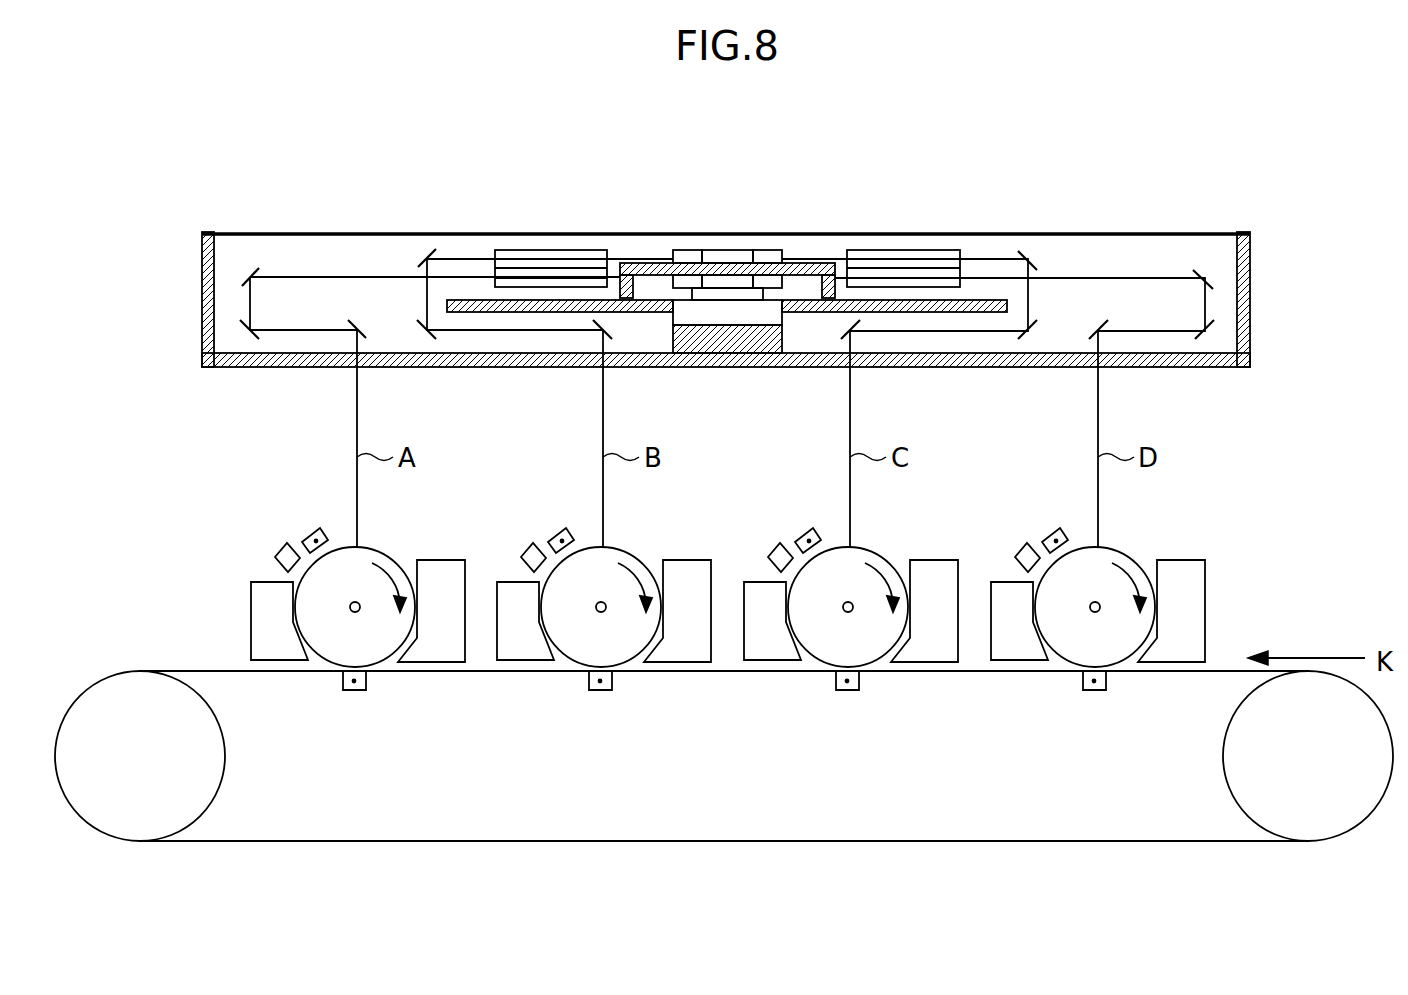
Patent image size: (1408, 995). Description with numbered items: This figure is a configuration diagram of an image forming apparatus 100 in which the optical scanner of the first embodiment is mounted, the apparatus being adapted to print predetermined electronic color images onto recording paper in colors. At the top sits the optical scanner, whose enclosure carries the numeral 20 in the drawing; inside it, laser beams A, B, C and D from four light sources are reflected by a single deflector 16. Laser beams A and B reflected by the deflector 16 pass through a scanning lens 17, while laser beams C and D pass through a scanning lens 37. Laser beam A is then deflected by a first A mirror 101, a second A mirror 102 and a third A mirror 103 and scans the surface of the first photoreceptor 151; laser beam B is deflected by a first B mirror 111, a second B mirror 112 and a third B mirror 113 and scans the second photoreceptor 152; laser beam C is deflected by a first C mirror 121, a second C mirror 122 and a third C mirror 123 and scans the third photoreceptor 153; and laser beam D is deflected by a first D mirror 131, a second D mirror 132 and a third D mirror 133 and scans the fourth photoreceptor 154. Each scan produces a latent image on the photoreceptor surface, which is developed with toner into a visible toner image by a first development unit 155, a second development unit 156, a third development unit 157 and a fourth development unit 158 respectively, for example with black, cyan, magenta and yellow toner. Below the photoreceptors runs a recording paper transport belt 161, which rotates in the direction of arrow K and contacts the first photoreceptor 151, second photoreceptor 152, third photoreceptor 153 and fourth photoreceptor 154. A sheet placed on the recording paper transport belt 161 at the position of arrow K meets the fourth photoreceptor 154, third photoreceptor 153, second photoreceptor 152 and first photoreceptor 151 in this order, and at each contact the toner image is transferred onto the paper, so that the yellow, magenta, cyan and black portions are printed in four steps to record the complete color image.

The image forming apparatus 100 is at (168, 121).
The optical scanning device housing 20 is at (1252, 302).
The deflector 16 is at (730, 250).
The scanning lens 17 is at (549, 250).
The scanning lens 37 is at (905, 250).
The first A mirror 101 is at (250, 267).
The second A mirror 102 is at (248, 340).
The third A mirror 103 is at (367, 333).
The first B mirror 111 is at (422, 265).
The second B mirror 112 is at (428, 341).
The third B mirror 113 is at (617, 332).
The first C mirror 121 is at (1030, 252).
The second C mirror 122 is at (1028, 342).
The third C mirror 123 is at (844, 336).
The first D mirror 131 is at (1206, 270).
The second D mirror 132 is at (1208, 340).
The third D mirror 133 is at (1093, 336).
The first photoreceptor 151 is at (312, 658).
The second photoreceptor 152 is at (558, 658).
The third photoreceptor 153 is at (805, 658).
The fourth photoreceptor 154 is at (1052, 658).
The first development unit 155 is at (430, 662).
The second development unit 156 is at (676, 662).
The third development unit 157 is at (923, 662).
The fourth development unit 158 is at (1170, 662).
The recording paper transport belt 161 is at (1067, 841).